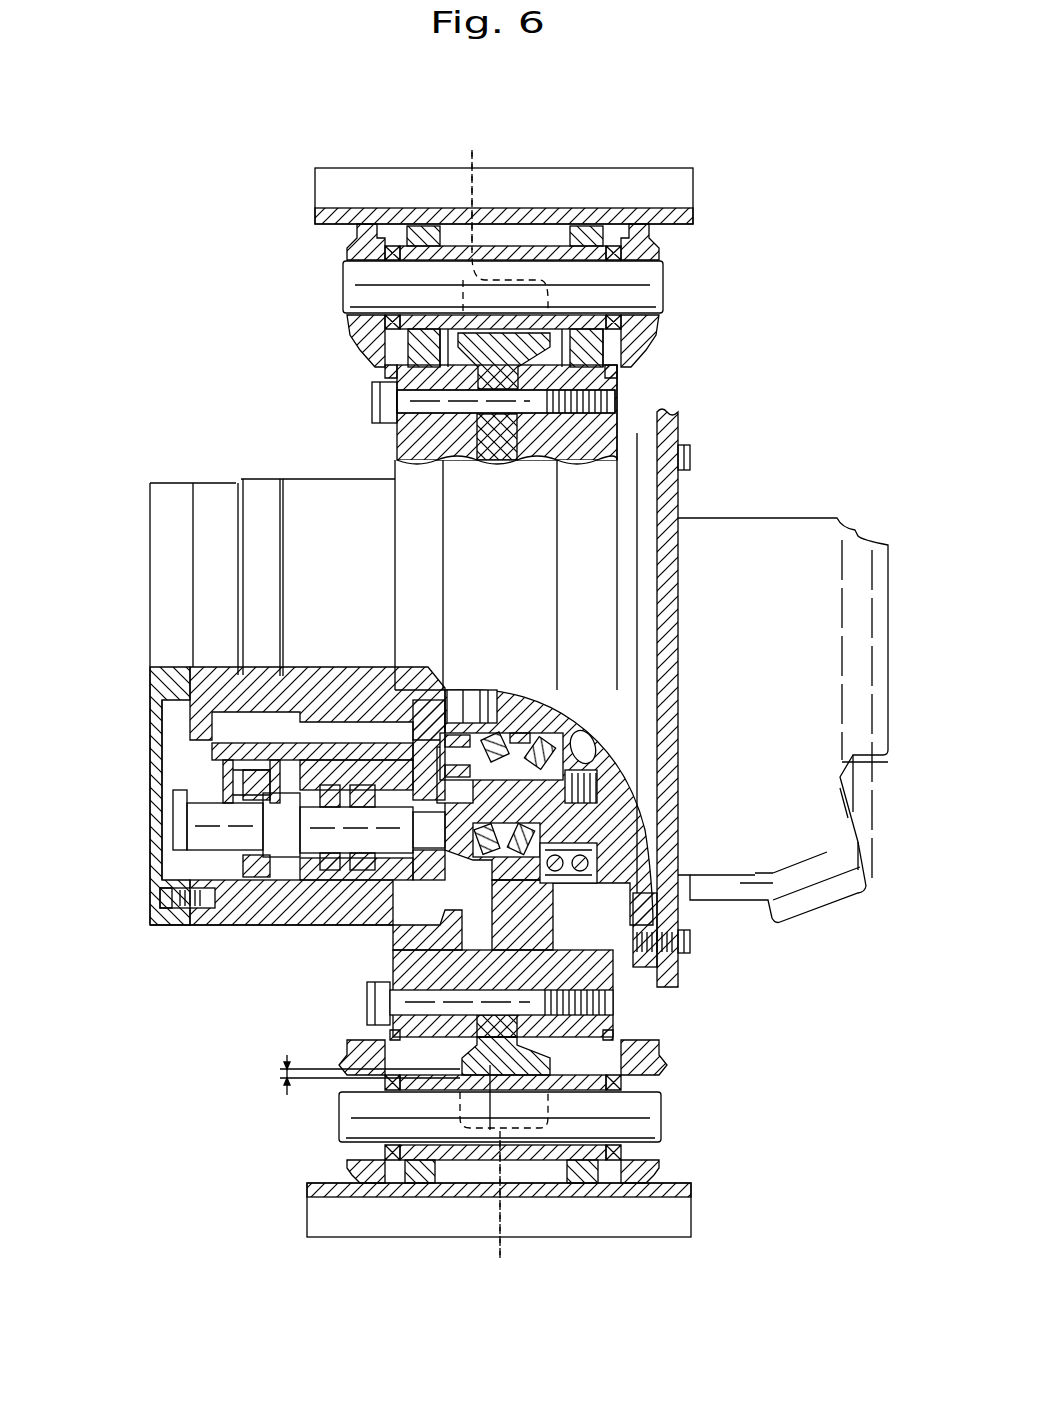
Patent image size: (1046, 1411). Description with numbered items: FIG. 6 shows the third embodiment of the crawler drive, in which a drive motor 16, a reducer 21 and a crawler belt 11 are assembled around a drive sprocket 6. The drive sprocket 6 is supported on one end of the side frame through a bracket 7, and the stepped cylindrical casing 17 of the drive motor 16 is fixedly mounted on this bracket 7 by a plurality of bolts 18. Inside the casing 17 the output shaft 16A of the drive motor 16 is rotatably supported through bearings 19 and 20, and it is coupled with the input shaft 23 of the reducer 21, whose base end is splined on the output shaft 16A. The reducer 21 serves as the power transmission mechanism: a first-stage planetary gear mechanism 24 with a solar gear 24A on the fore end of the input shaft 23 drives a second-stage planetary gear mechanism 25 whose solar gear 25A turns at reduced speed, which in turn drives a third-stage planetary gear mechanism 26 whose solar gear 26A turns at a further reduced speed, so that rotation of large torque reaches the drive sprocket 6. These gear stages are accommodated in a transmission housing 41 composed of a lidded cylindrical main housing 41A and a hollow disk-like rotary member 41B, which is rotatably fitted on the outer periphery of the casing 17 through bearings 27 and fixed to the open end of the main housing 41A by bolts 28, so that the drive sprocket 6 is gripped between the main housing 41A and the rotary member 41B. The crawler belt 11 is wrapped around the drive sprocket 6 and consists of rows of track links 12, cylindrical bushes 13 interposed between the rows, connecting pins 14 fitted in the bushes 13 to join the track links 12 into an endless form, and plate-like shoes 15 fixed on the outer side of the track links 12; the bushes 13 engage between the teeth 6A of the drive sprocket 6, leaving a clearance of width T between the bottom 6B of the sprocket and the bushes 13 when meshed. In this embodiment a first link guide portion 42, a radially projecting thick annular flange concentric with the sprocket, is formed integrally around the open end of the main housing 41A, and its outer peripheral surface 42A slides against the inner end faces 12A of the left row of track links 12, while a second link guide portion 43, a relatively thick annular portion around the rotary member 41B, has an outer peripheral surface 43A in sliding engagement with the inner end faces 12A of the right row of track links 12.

The drive sprocket 6 is at (535, 335).
The teeth 6A is at (485, 705).
The bottom 6B is at (490, 1065).
The bracket 7 is at (672, 965).
The crawler belt 11 is at (352, 1248).
The track links 12 is at (428, 235).
The inner end faces 12A is at (395, 372).
The cylindrical bushes 13 is at (512, 250).
The connecting pins 14 is at (655, 290).
The plate-like shoes 15 is at (672, 190).
The drive motor 16 is at (812, 540).
The output shaft 16A is at (500, 700).
The stepped cylindrical casing 17 is at (645, 975).
The bolts 18 is at (692, 453).
The bearing 19 is at (540, 705).
The bearing 20 is at (600, 715).
The reducer 21 is at (140, 523).
The input shaft 23 is at (270, 672).
The first-stage planetary gear mechanism 24 is at (165, 810).
The solar gear 24A is at (235, 770).
The second-stage planetary gear mechanism 25 is at (225, 920).
The solar gear 25A is at (225, 745).
The third-stage planetary gear mechanism 26 is at (270, 920).
The solar gear 26A is at (215, 712).
The bearings 27 is at (565, 812).
The bolts 28 is at (370, 402).
The transmission housing 41 is at (198, 482).
The main housing 41A is at (220, 940).
The rotary member 41B is at (400, 957).
The link guide portion 42 is at (405, 445).
The outer peripheral surface 42A is at (420, 348).
The link guide portion 43 is at (610, 420).
The outer peripheral surface 43A is at (590, 350).
The width of clearance T is at (356, 1075).